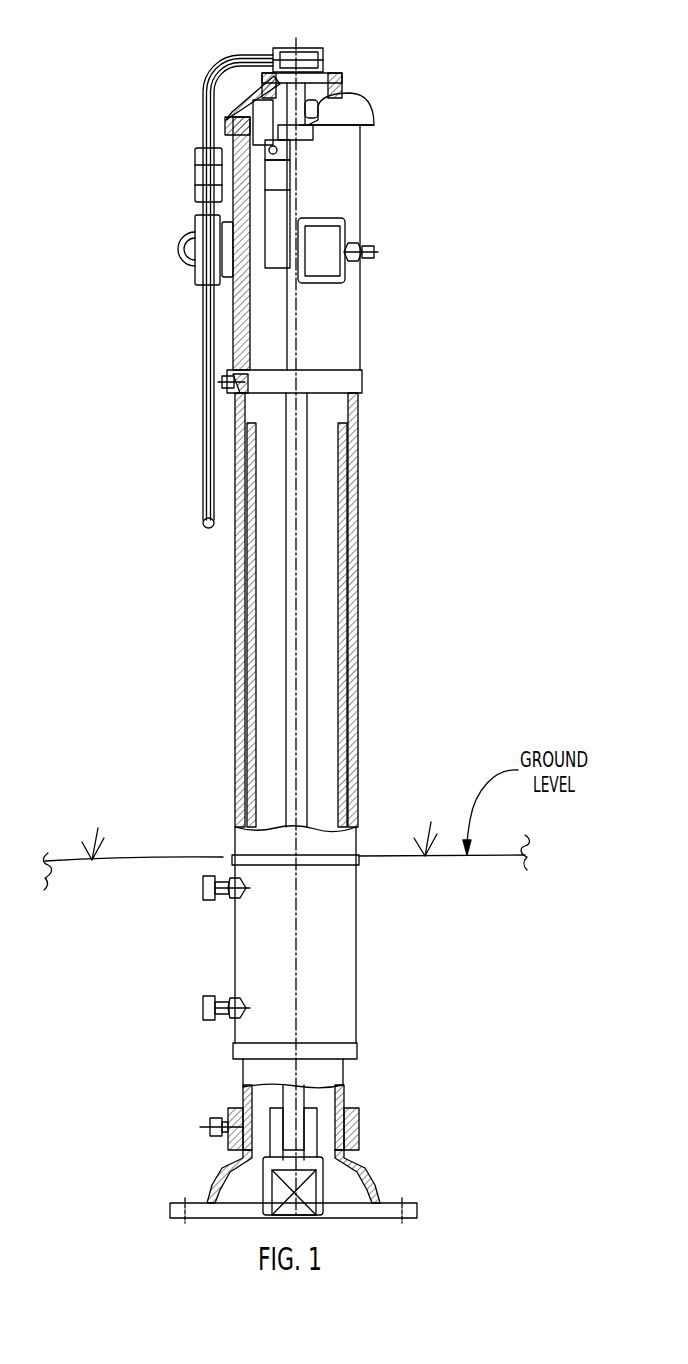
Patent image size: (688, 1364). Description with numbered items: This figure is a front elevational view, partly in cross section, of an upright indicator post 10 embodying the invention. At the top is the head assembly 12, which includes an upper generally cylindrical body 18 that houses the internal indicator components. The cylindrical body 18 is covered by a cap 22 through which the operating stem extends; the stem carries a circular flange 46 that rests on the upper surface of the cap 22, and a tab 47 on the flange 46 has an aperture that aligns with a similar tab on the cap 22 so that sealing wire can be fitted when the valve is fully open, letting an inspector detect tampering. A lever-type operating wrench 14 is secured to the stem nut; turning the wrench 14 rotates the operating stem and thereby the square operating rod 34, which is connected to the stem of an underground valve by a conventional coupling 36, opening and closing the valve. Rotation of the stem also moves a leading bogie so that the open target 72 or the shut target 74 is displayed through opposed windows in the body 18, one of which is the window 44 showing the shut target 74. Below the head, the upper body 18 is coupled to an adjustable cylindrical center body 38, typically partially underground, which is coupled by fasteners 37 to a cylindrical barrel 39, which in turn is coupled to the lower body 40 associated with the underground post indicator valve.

The upright indicator post 10 is at (456, 417).
The head assembly 12 is at (390, 196).
The lever-type operating wrench 14 is at (202, 338).
The upper generally cylindrical body 18 is at (362, 352).
The cap 22 is at (357, 105).
The operating rod 34 is at (300, 668).
The coupling 36 is at (345, 1137).
The fasteners 37 is at (203, 1008).
The adjustable cylindrical center body 38 is at (358, 530).
The cylindrical barrel 39 is at (343, 1080).
The lower body 40 is at (393, 1177).
The window 44 is at (345, 238).
The circular flange 46 is at (325, 68).
The tab 47 is at (342, 78).
The open target 72 is at (267, 198).
The shut target 74 is at (270, 267).